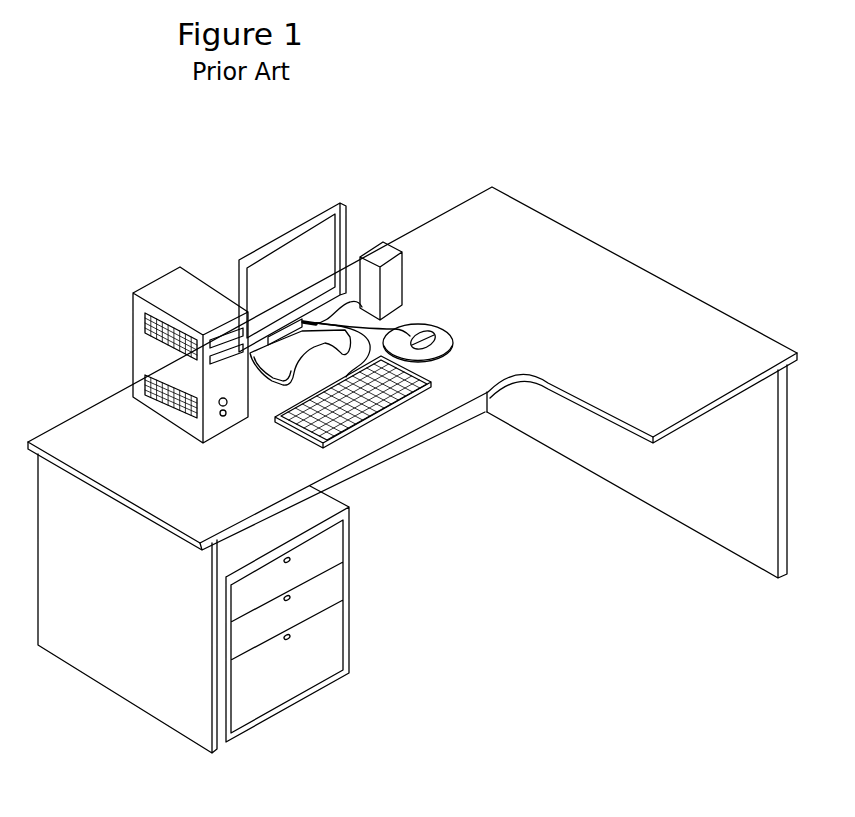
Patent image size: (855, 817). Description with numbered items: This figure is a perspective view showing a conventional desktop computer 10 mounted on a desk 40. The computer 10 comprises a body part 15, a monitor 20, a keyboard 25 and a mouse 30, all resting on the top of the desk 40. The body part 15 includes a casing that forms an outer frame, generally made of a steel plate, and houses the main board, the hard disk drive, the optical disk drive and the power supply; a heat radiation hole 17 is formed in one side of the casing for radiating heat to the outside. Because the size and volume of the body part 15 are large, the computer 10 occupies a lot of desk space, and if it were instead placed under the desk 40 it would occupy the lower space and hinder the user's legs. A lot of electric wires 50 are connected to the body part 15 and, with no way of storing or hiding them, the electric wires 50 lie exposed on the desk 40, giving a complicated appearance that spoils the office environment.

The desktop computer 10 is at (197, 192).
The body part 15 is at (168, 338).
The heat radiation hole 17 is at (143, 378).
The monitor 20 is at (302, 229).
The keyboard 25 is at (380, 400).
The mouse 30 is at (420, 332).
The desk 40 is at (608, 266).
The electric wires 50 is at (402, 320).